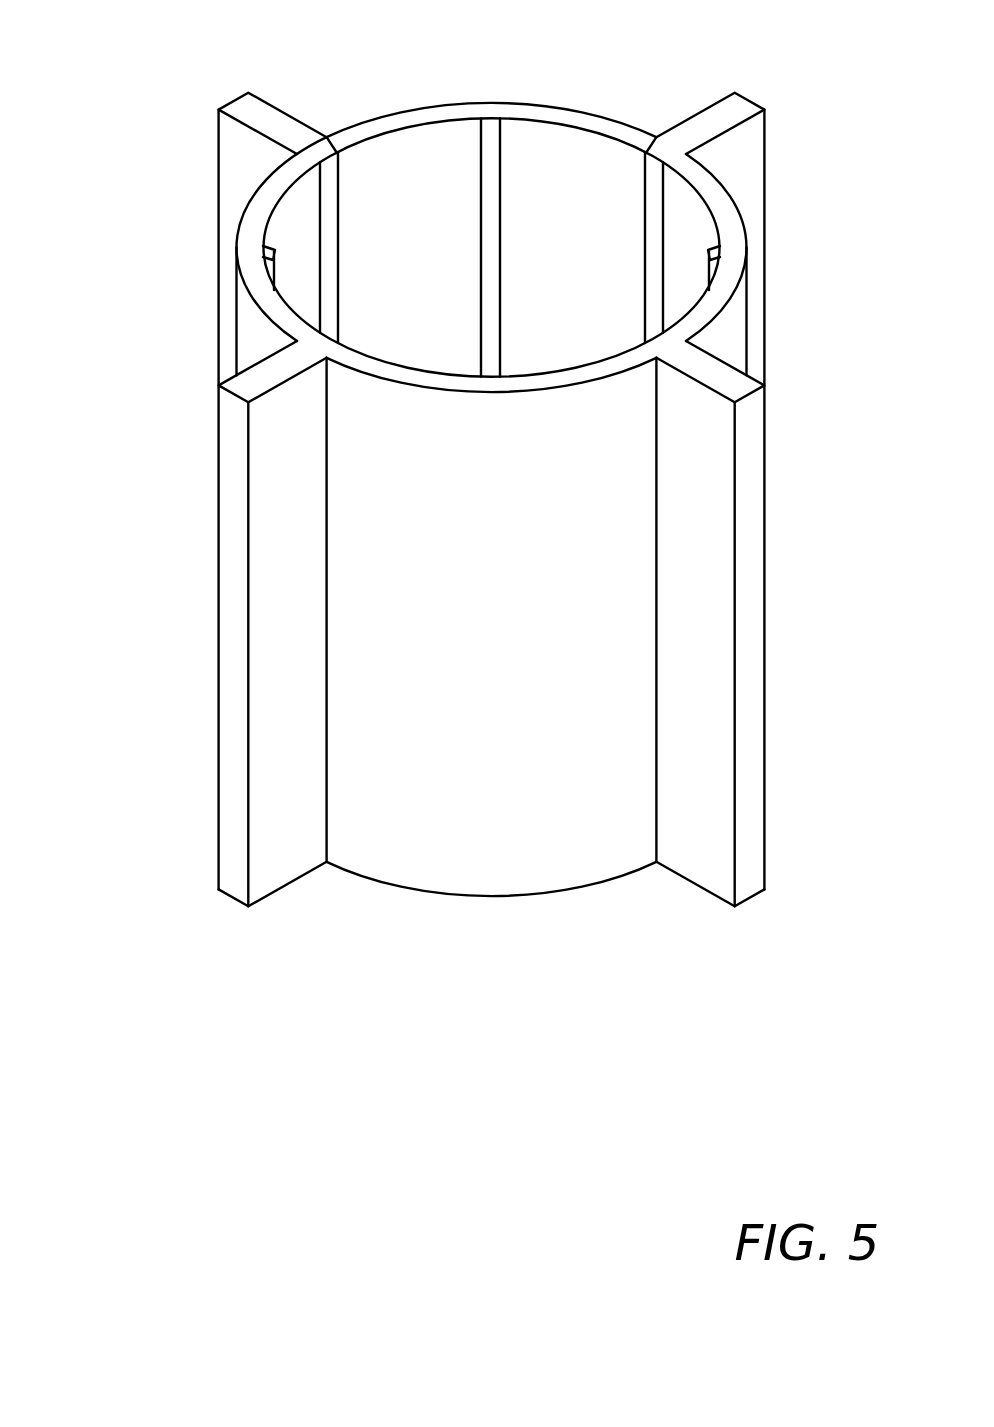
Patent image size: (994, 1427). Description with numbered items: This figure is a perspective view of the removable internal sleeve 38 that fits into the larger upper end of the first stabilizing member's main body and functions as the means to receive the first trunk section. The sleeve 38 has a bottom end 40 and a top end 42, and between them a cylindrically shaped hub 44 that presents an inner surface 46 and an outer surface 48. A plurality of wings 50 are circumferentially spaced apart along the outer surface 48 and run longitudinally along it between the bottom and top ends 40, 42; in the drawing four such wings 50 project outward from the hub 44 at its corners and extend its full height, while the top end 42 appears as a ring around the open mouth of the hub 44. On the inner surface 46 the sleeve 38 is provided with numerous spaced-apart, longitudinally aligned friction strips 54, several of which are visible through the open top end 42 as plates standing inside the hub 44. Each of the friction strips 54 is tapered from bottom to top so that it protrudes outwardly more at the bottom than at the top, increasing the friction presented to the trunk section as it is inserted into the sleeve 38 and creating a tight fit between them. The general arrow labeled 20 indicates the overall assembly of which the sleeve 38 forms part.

The insert assembly 20 is at (203, 55).
The internal sleeve 38 is at (158, 798).
The bottom end 40 is at (457, 895).
The top end 42 is at (570, 118).
The hub 44 is at (478, 669).
The inner surface 46 is at (418, 143).
The outer surface 48 is at (367, 603).
The wings 50 is at (232, 160).
The friction strips 54 is at (333, 197).